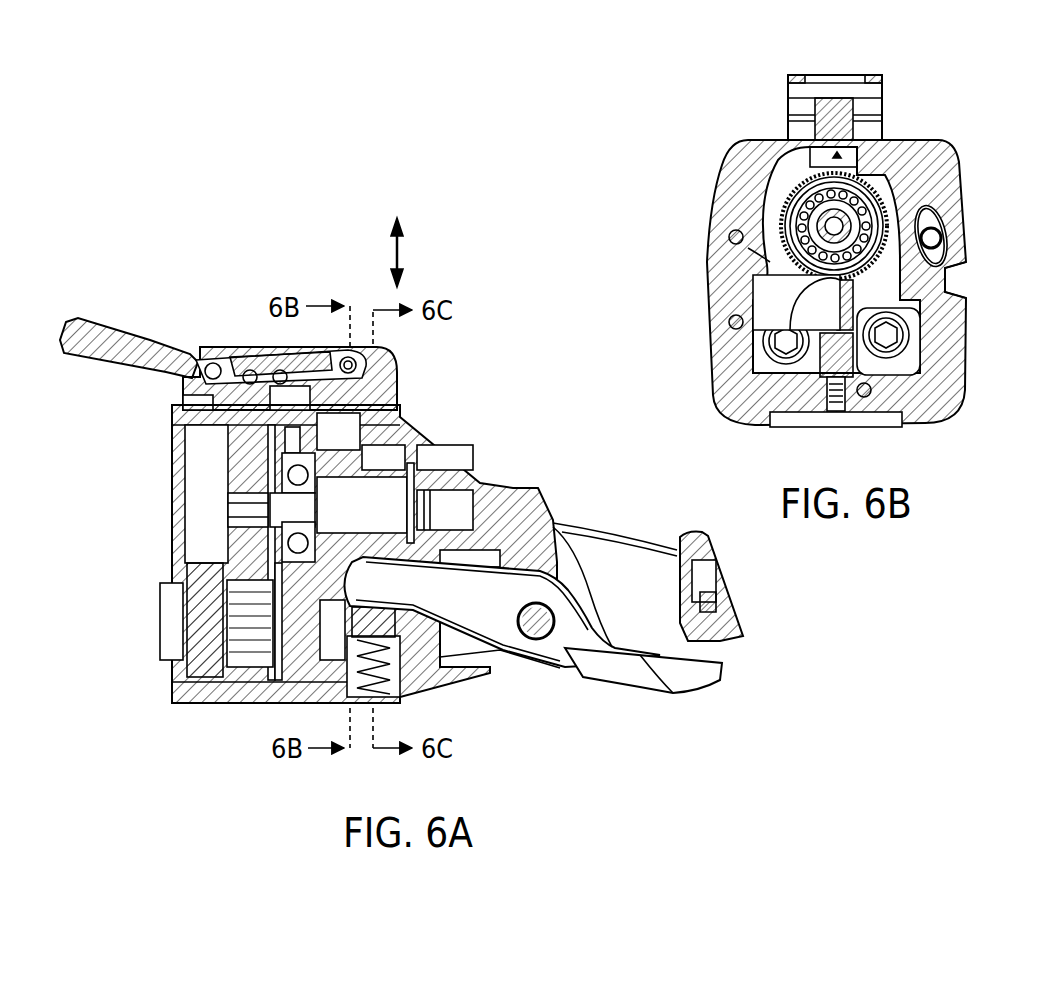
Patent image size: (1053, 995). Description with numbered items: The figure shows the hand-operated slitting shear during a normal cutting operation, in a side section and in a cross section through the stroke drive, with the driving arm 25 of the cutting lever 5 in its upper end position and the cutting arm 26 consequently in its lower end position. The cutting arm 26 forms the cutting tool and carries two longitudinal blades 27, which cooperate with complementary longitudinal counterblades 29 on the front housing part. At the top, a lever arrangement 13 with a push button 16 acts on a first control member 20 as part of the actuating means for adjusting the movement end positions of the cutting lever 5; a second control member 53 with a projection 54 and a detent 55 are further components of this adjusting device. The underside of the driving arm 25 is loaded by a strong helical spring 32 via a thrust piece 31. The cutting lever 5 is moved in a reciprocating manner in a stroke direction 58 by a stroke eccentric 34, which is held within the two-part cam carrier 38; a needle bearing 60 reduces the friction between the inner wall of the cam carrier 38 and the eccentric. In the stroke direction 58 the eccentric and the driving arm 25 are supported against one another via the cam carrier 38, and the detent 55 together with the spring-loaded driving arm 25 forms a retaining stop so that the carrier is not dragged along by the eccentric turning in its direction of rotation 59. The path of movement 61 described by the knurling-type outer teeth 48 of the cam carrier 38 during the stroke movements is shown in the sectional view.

In FIG. 6A, the cutting lever 5 is at (521, 670).
In FIG. 6A, the lever arrangement 13 is at (226, 339).
In FIG. 6A, the push button 16 is at (84, 340).
In FIG. 6B, the first control member 20 is at (856, 115).
In FIG. 6A, the driving arm 25 is at (430, 597).
In FIG. 6A, the cutting arm 26 is at (585, 702).
In FIG. 6A, the longitudinal blades 27 is at (670, 688).
In FIG. 6A, the longitudinal counterblades 29 is at (720, 647).
In FIG. 6A, the thrust piece 31 is at (323, 607).
In FIG. 6A, the helical spring 32 is at (350, 673).
In FIG. 6A, the stroke eccentric 34 is at (388, 494).
In FIG. 6B, the stroke eccentric 34 is at (752, 304).
In FIG. 6B, the cam carrier 38 is at (999, 253).
In FIG. 6B, the knurling-type outer teeth 48 is at (776, 222).
In FIG. 6B, the second control member 53 is at (958, 242).
In FIG. 6B, the projection 54 is at (918, 228).
In FIG. 6B, the detent 55 is at (745, 258).
In FIG. 6A, the stroke direction 58 is at (397, 253).
In FIG. 6B, the direction of rotation 59 is at (848, 224).
In FIG. 6B, the needle bearing 60 is at (767, 215).
In FIG. 6B, the path of movement 61 is at (963, 306).